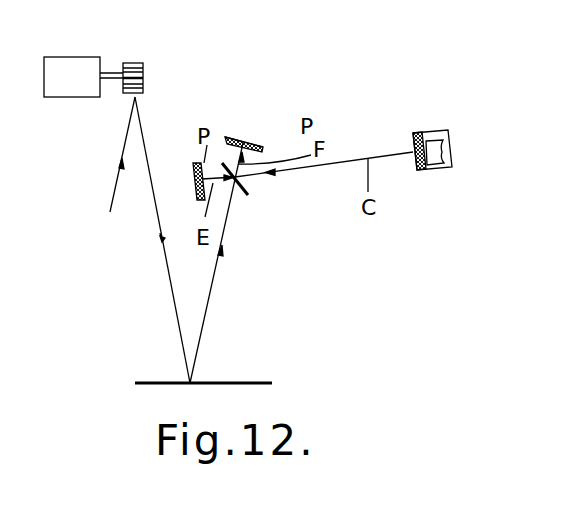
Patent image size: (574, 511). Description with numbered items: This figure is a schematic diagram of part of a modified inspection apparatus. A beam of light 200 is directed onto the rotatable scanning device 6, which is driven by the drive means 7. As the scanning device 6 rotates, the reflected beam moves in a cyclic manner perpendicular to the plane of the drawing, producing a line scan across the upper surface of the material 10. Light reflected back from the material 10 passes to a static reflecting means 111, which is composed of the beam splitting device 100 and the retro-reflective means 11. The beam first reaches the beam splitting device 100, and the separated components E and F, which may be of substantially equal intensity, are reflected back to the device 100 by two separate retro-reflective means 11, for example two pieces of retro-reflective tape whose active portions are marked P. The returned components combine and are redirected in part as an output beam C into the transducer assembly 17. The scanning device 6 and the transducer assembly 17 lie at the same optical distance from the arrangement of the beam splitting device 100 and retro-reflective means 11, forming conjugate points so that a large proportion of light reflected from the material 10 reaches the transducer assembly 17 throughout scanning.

The drive means 7 is at (58, 68).
The rotatable scanning device 6 is at (138, 70).
The beam of light 200 is at (123, 150).
The retro-reflective means 11 is at (190, 170).
The static reflecting means 111 is at (231, 130).
The beam splitting device 100 is at (242, 192).
The material 10 is at (223, 382).
The transducer assembly 17 is at (433, 171).